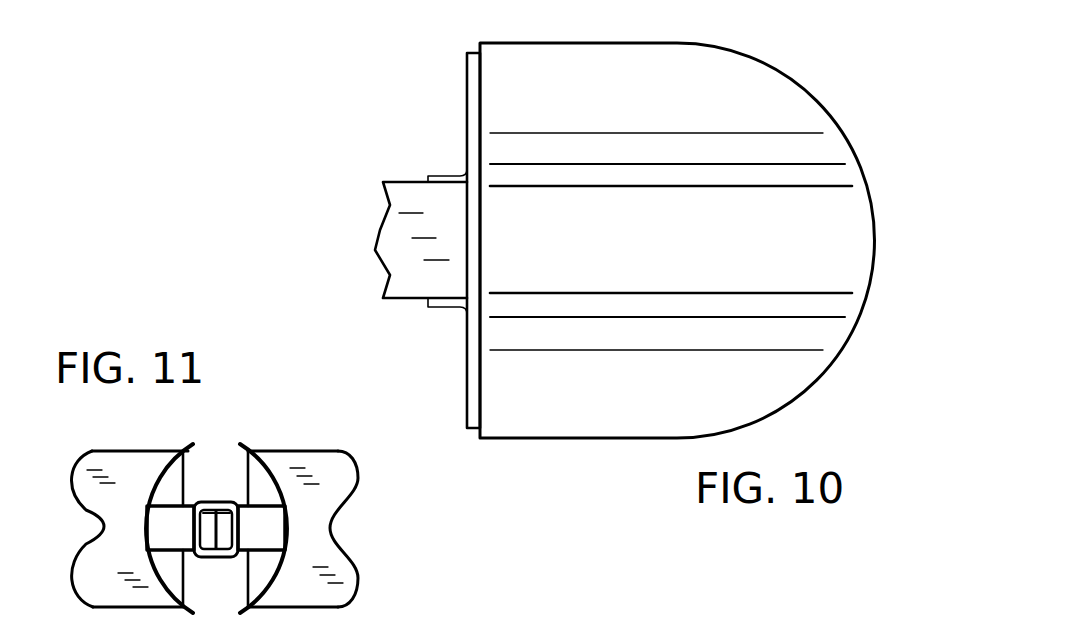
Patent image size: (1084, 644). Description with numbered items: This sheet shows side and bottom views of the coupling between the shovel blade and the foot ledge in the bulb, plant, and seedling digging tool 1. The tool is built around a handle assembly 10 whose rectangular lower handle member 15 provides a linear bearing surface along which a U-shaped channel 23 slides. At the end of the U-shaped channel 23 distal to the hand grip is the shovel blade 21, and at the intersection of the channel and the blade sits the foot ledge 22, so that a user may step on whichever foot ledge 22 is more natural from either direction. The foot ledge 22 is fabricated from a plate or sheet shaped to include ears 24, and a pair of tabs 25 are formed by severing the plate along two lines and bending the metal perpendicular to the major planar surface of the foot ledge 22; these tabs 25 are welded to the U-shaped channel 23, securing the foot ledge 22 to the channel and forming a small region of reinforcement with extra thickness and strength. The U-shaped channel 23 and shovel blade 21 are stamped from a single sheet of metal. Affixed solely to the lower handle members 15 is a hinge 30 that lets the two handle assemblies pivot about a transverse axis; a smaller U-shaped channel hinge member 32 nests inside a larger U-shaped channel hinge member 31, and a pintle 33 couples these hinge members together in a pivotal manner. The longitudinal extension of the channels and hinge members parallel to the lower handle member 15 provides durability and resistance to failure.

In FIG. 11, the bulb, plant, and seedling digging tool 1 is at (92, 434).
In FIG. 11, the handle assembly 10 is at (170, 534).
In FIG. 11, the lower handle member 15 is at (257, 537).
In FIG. 10, the shovel blade 21 is at (760, 375).
In FIG. 11, the shovel blade 21 is at (285, 566).
In FIG. 10, the foot ledge 22 is at (471, 100).
In FIG. 11, the foot ledge 22 is at (336, 528).
In FIG. 10, the U-shaped channel 23 is at (402, 201).
In FIG. 11, the U-shaped channel 23 is at (267, 506).
In FIG. 11, the ears 24 is at (352, 483).
In FIG. 10, the tabs 25 is at (438, 176).
In FIG. 11, the hinge 30 is at (232, 503).
In FIG. 11, the larger U-shaped channel hinge member 31 is at (227, 494).
In FIG. 11, the smaller U-shaped channel hinge member 32 is at (193, 500).
In FIG. 11, the pintle 33 is at (223, 555).